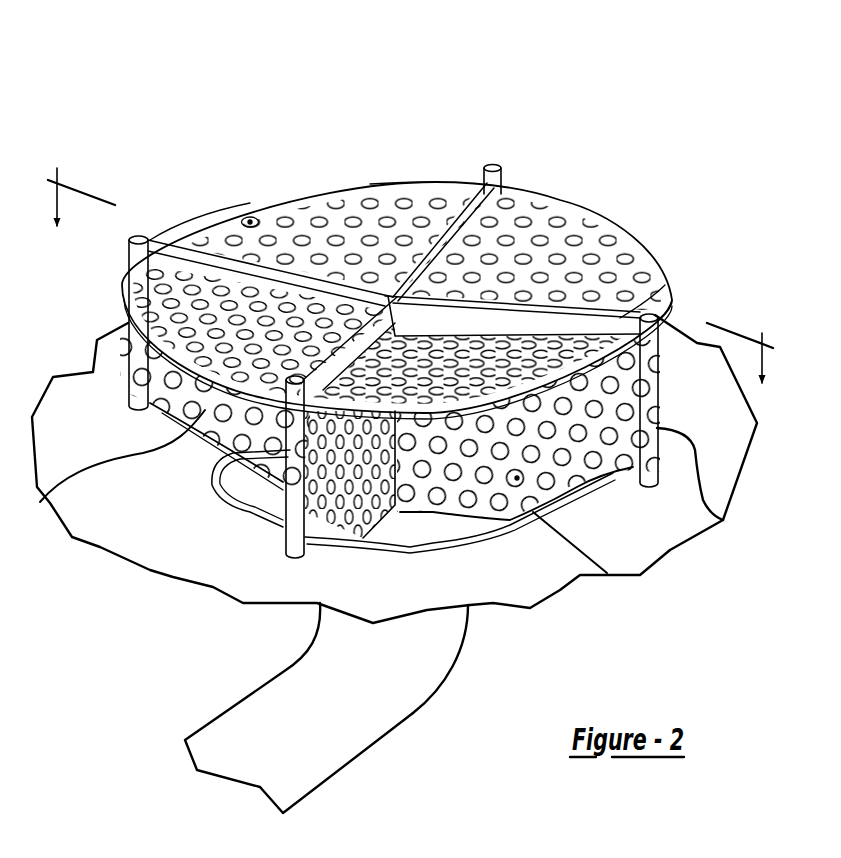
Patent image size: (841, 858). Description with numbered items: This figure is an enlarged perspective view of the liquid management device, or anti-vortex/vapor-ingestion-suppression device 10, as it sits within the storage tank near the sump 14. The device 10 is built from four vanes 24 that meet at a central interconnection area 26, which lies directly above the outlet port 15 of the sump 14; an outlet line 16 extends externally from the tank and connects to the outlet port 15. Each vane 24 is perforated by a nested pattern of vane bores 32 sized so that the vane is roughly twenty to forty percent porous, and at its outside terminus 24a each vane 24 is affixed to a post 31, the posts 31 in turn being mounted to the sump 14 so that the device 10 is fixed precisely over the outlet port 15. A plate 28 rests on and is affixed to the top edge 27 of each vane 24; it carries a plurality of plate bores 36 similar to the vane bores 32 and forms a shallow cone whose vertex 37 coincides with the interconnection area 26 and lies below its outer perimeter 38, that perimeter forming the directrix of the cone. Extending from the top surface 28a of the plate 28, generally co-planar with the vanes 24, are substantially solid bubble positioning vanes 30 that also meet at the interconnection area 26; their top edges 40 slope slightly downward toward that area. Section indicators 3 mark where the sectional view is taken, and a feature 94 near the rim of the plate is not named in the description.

The liquid management device (anti-vortex/vapor-ingestion-suppression device) 10 is at (150, 95).
The plate 28 is at (550, 205).
The top surface of plate 28a is at (182, 235).
The plate bores 36 is at (250, 222).
The interconnection area 26 is at (410, 205).
The vertex of plate 37 is at (497, 318).
The plate rim 94 is at (640, 300).
The outer perimeter of plate 38 is at (662, 303).
The top edges of bubble positioning vanes 40 is at (372, 312).
The bubble positioning vanes 30 is at (333, 355).
The sump 14 is at (460, 528).
The top edge of vane 27 is at (395, 398).
The vane bores 32 is at (517, 480).
The vanes 24 is at (40, 502).
The outside terminus of vane 24a is at (642, 452).
The post 31 is at (723, 520).
The outlet line 16 is at (268, 733).
The outlet port 15 is at (407, 512).
The section line 3- 3 is at (409, 258).